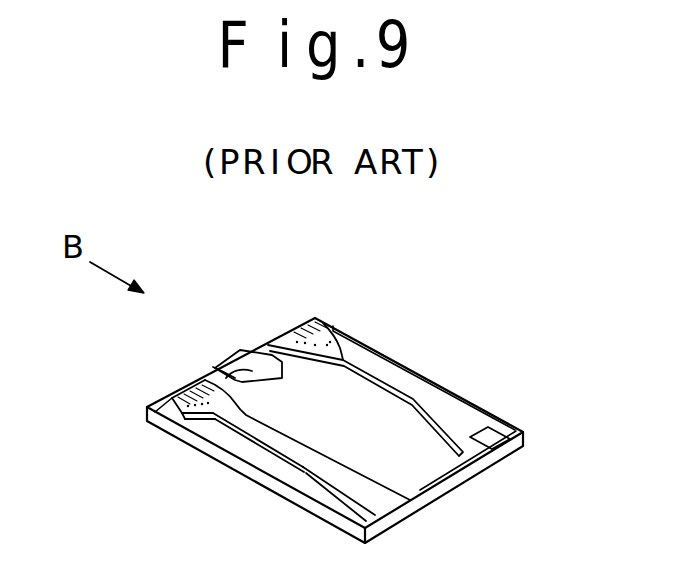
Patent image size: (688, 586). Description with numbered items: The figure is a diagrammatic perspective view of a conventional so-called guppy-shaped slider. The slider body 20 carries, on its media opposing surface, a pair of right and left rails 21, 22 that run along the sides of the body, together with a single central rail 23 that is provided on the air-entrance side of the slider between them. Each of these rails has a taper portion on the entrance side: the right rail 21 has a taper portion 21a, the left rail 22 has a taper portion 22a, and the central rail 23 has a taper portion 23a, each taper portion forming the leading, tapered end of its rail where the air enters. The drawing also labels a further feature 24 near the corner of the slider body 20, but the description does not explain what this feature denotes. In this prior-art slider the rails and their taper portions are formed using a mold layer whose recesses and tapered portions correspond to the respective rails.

The slider body 20 is at (407, 310).
The right rail 21 is at (355, 488).
The taper portion 21a is at (172, 393).
The left rail 22 is at (453, 413).
The taper portion 22a is at (299, 324).
The central rail 23 is at (224, 372).
The taper portion 23a is at (240, 352).
The contact pad 24 is at (490, 424).